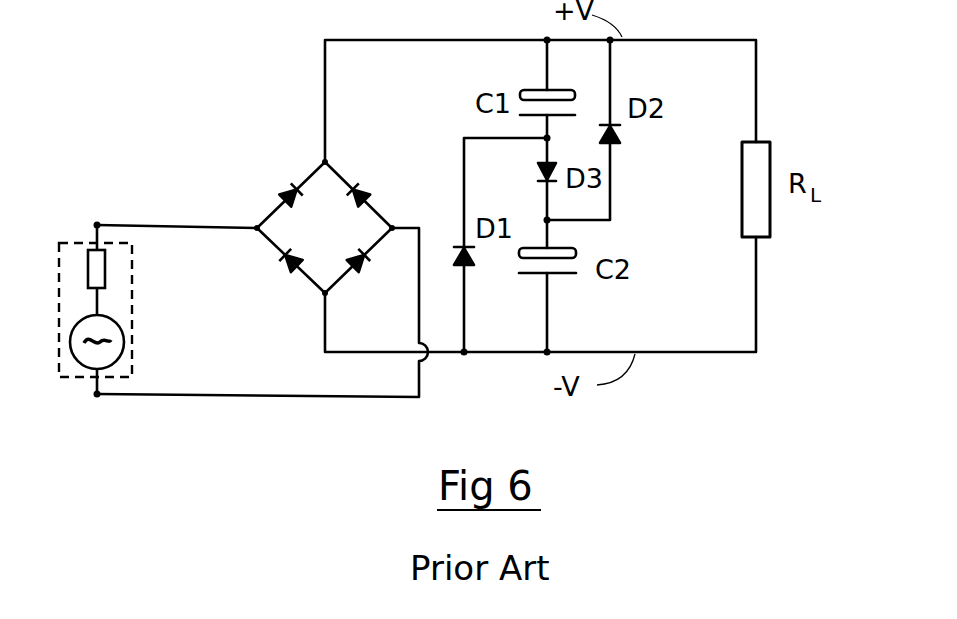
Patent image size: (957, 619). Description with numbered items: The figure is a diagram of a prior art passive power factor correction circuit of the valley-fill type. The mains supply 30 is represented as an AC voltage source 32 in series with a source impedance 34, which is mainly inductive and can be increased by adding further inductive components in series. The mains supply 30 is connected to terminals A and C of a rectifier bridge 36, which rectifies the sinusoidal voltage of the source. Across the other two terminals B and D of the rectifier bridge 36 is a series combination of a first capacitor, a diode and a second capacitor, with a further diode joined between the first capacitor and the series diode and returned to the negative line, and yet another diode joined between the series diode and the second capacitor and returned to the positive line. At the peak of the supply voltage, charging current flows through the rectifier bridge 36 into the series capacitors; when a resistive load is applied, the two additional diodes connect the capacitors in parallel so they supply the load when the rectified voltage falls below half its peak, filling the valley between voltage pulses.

The mains supply 30 is at (62, 380).
The AC voltage source 32 is at (122, 352).
The source impedance 34 is at (90, 270).
The rectifier bridge 36 is at (290, 224).